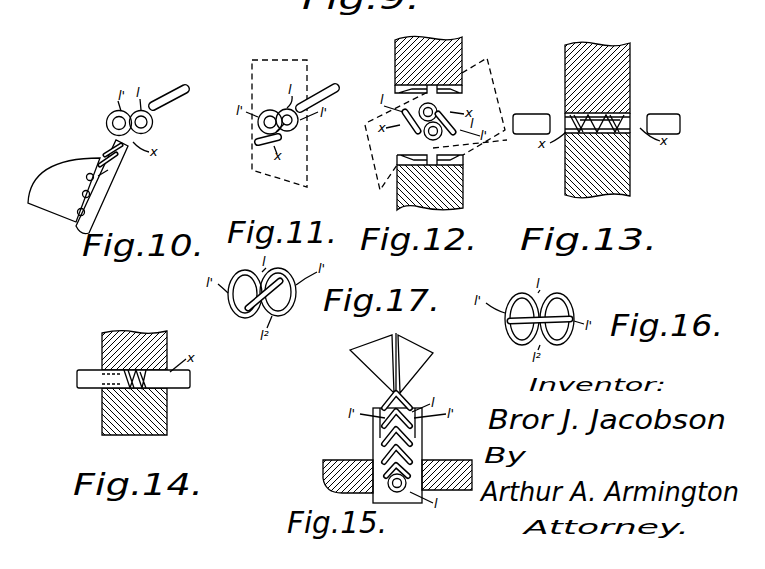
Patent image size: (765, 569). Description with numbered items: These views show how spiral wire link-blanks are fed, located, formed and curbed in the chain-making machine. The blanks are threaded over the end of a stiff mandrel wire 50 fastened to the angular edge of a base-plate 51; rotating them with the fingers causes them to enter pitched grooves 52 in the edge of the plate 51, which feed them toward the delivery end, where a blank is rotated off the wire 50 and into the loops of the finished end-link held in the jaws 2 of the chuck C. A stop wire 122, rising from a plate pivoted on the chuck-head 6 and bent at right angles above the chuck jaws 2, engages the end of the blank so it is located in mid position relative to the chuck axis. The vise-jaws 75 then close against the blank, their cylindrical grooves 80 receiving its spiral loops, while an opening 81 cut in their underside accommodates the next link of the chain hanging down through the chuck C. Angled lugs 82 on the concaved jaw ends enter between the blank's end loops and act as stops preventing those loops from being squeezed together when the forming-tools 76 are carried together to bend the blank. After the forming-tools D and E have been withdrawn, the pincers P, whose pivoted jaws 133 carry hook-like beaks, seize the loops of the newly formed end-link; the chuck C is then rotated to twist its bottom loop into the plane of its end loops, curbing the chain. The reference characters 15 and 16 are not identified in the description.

In FIG. 10, the stop wire 122 is at (173, 97).
In FIG. 11, the stop wire 122 is at (325, 90).
In FIG. 10, the mandrel wire 50 is at (94, 213).
In FIG. 10, the base-plate 51 is at (64, 190).
In FIG. 10, the grooves 52 is at (88, 175).
In FIG. 12, the vise-jaws 75 is at (462, 184).
In FIG. 13, the vise-jaws 75 is at (625, 174).
In FIG. 14, the vise-jaws 75 is at (168, 421).
In FIG. 13, the forming-tools 76 is at (596, 124).
In FIG. 14, the forming-tools 76 is at (190, 377).
In FIG. 12, the cylindrical grooves 80 is at (398, 158).
In FIG. 13, the cylindrical grooves 80 is at (570, 130).
In FIG. 14, the cylindrical grooves 80 is at (160, 390).
In FIG. 12, the opening 81 is at (463, 160).
In FIG. 13, the opening 81 is at (577, 112).
In FIG. 14, the opening 81 is at (167, 383).
In FIG. 12, the projecting lugs 82 is at (420, 155).
In FIG. 13, the projecting lugs 82 is at (630, 130).
In FIG. 14, the projecting lugs 82 is at (122, 390).
In FIG. 15, the pincer-jaws 133 is at (380, 393).
In FIG. 15, the housing 16 is at (416, 424).
In FIG. 15, the housing wall 15 is at (416, 438).
In FIG. 15, the chuck-head 6 is at (458, 462).
In FIG. 11, the chuck jaws 2 is at (305, 132).
In FIG. 12, the chuck jaws 2 is at (392, 187).
In FIG. 15, the chuck jaws 2 is at (377, 446).
In FIG. 10, the chuck C is at (54, 176).
In FIG. 11, the chuck C is at (262, 178).
In FIG. 12, the chuck C is at (430, 124).
In FIG. 15, the chuck C is at (386, 476).
In FIG. 12, the forming-tool D is at (425, 211).
In FIG. 13, the forming-tool D is at (597, 198).
In FIG. 14, the forming-tool D is at (148, 436).
In FIG. 13, the forming-tool E is at (681, 125).
In FIG. 15, the pincers P is at (391, 351).